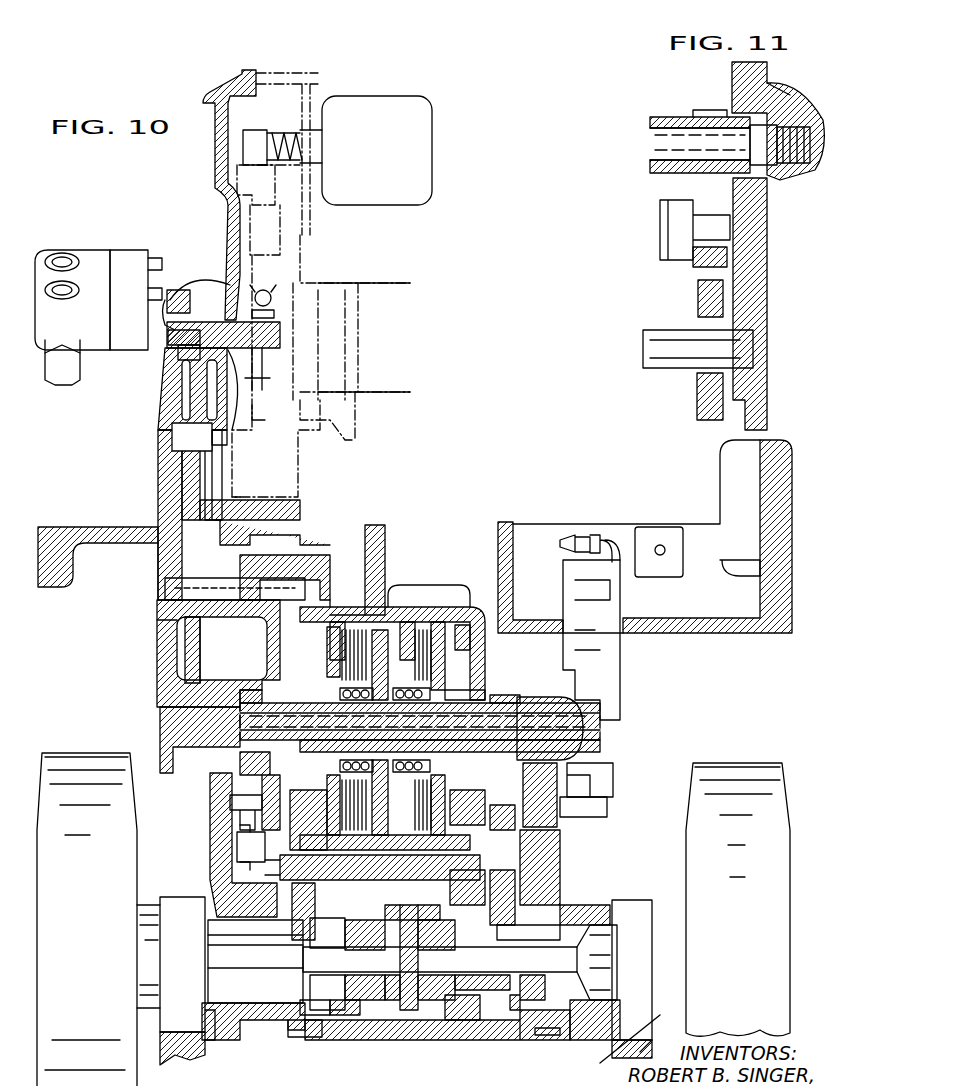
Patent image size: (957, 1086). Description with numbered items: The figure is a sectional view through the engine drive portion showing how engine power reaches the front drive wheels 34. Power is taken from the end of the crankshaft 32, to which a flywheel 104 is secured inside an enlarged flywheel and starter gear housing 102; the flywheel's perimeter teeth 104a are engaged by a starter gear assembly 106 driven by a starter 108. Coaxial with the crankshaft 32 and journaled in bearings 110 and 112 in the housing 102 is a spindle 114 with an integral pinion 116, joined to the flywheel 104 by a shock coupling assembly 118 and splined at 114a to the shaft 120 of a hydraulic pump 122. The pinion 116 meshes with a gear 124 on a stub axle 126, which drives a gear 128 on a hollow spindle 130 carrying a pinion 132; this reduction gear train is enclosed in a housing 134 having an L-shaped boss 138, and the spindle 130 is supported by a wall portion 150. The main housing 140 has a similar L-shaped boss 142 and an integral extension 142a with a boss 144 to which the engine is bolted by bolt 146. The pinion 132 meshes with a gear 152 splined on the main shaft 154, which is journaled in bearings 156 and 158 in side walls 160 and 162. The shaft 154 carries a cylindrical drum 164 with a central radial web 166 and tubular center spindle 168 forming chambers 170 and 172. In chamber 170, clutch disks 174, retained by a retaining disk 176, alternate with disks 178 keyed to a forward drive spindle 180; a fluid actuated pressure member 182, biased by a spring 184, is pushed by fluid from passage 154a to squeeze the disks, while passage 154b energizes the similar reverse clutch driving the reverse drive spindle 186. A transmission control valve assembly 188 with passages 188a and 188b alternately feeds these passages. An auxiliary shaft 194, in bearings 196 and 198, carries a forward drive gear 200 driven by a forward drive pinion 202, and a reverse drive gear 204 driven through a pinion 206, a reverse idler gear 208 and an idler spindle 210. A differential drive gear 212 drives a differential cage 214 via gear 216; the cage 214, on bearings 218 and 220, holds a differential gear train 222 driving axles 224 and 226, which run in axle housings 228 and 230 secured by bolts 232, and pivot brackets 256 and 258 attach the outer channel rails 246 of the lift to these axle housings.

In FIG. 10, the crankshaft 32 is at (350, 330).
In FIG. 10, the front drive wheels 34 is at (700, 838).
In FIG. 10, the flywheel and starter gear housing 102 is at (232, 92).
In FIG. 10, the flywheel 104 is at (285, 200).
In FIG. 10, the teeth 104a is at (255, 500).
In FIG. 10, the starter gear assembly 106 is at (250, 140).
In FIG. 10, the starter 108 is at (372, 110).
In FIG. 10, the bearing 110 is at (240, 390).
In FIG. 10, the bearing 112 is at (182, 360).
In FIG. 10, the spindle 114 is at (252, 335).
In FIG. 10, the splined end 114a is at (172, 292).
In FIG. 10, the pinion 116 is at (178, 290).
In FIG. 10, the shock coupling assembly 118 is at (280, 312).
In FIG. 10, the shaft 120 is at (175, 345).
In FIG. 10, the hydraulic pump 122 is at (92, 245).
In FIG. 10, the gear 124 is at (195, 480).
In FIG. 10, the stub axle 126 is at (192, 437).
In FIG. 10, the gear 128 is at (192, 540).
In FIG. 10, the hollow spindle 130 is at (165, 640).
In FIG. 10, the pinion 132 is at (280, 568).
In FIG. 10, the housing 134 is at (158, 598).
In FIG. 10, the L-shaped boss 138 is at (52, 572).
In FIG. 10, the housing 140 is at (375, 1013).
In FIG. 10, the L-shaped boss 142 is at (760, 470).
In FIG. 10, the integral extension 142a is at (700, 600).
In FIG. 10, the boss 144 is at (652, 525).
In FIG. 10, the bolt 146 is at (660, 545).
In FIG. 10, the wall portion 150 is at (335, 615).
In FIG. 10, the gear 152 is at (160, 652).
In FIG. 10, the main clutch and transmission shaft 154 is at (230, 728).
In FIG. 11, the main clutch and transmission shaft 154 is at (665, 125).
In FIG. 10, the fluid passage 154a is at (600, 722).
In FIG. 11, the fluid passage 154a is at (655, 135).
In FIG. 10, the fluid passage 154b is at (590, 735).
In FIG. 11, the fluid passage 154b is at (655, 148).
In FIG. 10, the bearing 156 is at (235, 775).
In FIG. 10, the bearing 158 is at (575, 778).
In FIG. 10, the side wall 160 is at (235, 802).
In FIG. 10, the side wall 162 is at (608, 805).
In FIG. 10, the cylindrical drum 164 is at (412, 612).
In FIG. 10, the central radial web 166 is at (475, 636).
In FIG. 10, the tubular center spindle 168 is at (432, 772).
In FIG. 10, the chamber 170 is at (345, 650).
In FIG. 10, the chamber 172 is at (425, 655).
In FIG. 10, the clutch disks 174 is at (342, 625).
In FIG. 10, the retaining disk 176 is at (330, 636).
In FIG. 10, the disks 178 is at (343, 665).
In FIG. 10, the forward drive spindle 180 is at (330, 845).
In FIG. 10, the fluid actuated pressure member 182 is at (420, 610).
In FIG. 10, the spring 184 is at (360, 758).
In FIG. 10, the reverse drive spindle 186 is at (438, 690).
In FIG. 10, the transmission control valve assembly 188 is at (605, 708).
In FIG. 11, the transmission control valve assembly 188 is at (775, 195).
In FIG. 11, the passage 188a is at (800, 100).
In FIG. 11, the passage 188b is at (790, 150).
In FIG. 10, the auxiliary shaft 194 is at (330, 870).
In FIG. 11, the auxiliary shaft 194 is at (675, 340).
In FIG. 10, the bearing 196 is at (236, 828).
In FIG. 10, the bearing 198 is at (500, 885).
In FIG. 10, the forward drive gear 200 is at (292, 932).
In FIG. 10, the forward drive pinion 202 is at (282, 692).
In FIG. 10, the reverse drive gear 204 is at (570, 905).
In FIG. 11, the reverse drive gear 204 is at (700, 395).
In FIG. 10, the pinion 206 is at (505, 695).
In FIG. 11, the pinion 206 is at (712, 110).
In FIG. 11, the reverse idler gear 208 is at (700, 262).
In FIG. 11, the idler spindle 210 is at (690, 222).
In FIG. 10, the differential drive gear 212 is at (452, 887).
In FIG. 10, the differential cage 214 is at (495, 990).
In FIG. 10, the gear 216 is at (465, 1010).
In FIG. 10, the bearing 218 is at (352, 1012).
In FIG. 10, the bearing 220 is at (525, 1010).
In FIG. 10, the differential gear train 222 is at (425, 1012).
In FIG. 10, the differential drive wheel axle 224 is at (255, 950).
In FIG. 10, the differential drive wheel axle 226 is at (495, 974).
In FIG. 10, the axle housing 228 is at (210, 1035).
In FIG. 10, the axle housing 230 is at (562, 1030).
In FIG. 10, the bolts 232 is at (268, 1022).
In FIG. 10, the outer channel rails 246 is at (660, 1030).
In FIG. 10, the pivot bracket 256 is at (175, 967).
In FIG. 10, the pivot bracket 258 is at (633, 910).